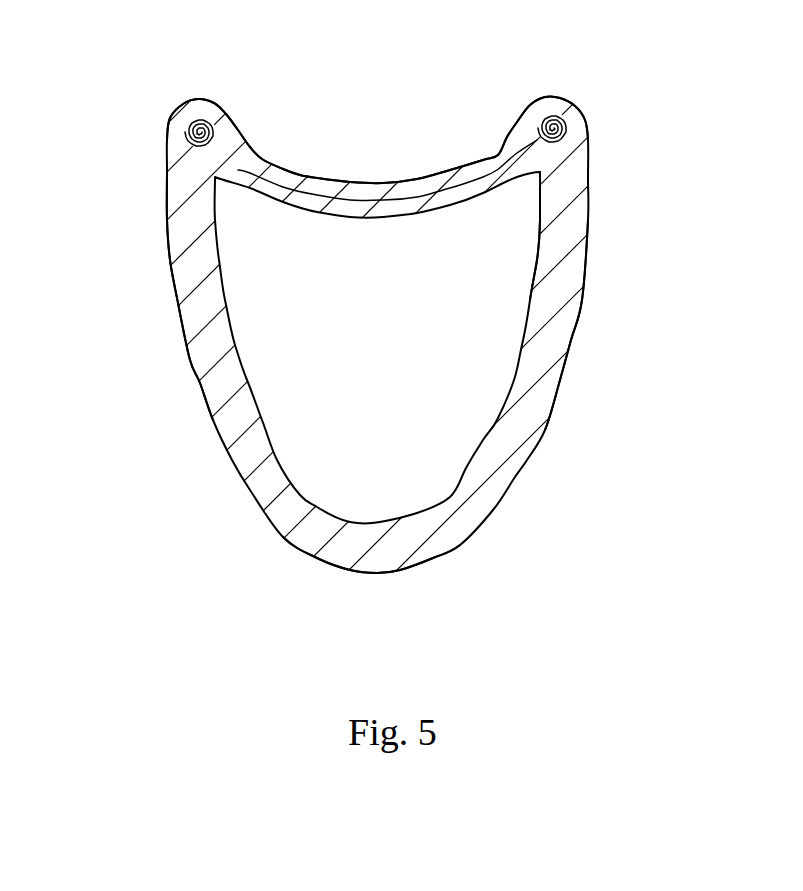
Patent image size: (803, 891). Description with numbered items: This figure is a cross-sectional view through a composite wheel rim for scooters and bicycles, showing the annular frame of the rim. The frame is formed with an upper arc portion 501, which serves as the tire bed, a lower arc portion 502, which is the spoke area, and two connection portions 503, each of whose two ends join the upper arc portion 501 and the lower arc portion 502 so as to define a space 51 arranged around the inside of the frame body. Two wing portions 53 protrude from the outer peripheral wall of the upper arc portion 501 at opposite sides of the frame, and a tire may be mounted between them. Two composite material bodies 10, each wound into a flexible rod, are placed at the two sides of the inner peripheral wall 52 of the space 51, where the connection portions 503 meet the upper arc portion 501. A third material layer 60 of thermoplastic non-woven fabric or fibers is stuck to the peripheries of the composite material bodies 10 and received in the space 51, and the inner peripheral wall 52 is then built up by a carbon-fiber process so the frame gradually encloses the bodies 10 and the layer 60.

The space 51 is at (496, 304).
The wing portion 53 is at (203, 98).
The composite material body 10 is at (188, 138).
The upper arc portion 501 is at (288, 167).
The third material layer 60 is at (410, 195).
The inner peripheral wall 52 is at (537, 250).
The connection portion 503 is at (183, 330).
The lower arc portion 502 is at (339, 568).